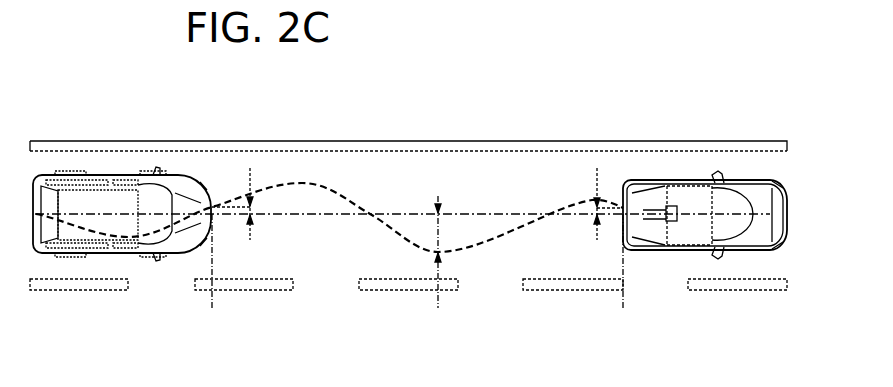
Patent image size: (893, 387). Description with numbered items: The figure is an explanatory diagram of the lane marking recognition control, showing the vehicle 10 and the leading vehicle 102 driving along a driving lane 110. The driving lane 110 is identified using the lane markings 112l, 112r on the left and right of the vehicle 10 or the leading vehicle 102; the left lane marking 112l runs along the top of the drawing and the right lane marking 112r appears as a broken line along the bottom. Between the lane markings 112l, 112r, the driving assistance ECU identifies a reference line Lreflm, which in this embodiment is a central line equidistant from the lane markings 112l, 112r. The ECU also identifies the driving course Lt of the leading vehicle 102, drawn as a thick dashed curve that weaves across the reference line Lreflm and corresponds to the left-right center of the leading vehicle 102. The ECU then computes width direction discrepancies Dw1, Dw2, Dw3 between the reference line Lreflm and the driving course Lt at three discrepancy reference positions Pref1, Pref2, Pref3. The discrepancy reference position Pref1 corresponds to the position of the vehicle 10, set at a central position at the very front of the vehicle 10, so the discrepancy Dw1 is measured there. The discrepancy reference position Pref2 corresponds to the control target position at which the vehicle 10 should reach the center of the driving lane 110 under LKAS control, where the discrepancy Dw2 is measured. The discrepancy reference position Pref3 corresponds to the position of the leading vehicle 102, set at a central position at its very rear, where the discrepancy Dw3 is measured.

The vehicle 10 is at (182, 186).
The leading vehicle 102 is at (762, 193).
The driving lane 110 is at (372, 163).
The lane marking 112l is at (488, 147).
The lane marking 112r is at (372, 290).
The driving course Lt is at (305, 182).
The reference line Lreflm is at (325, 216).
The width direction discrepancy Dw1 is at (232, 200).
The width direction discrepancy Dw2 is at (456, 229).
The width direction discrepancy Dw3 is at (590, 200).
The discrepancy reference position Pref1 is at (211, 280).
The discrepancy reference position Pref2 is at (438, 304).
The discrepancy reference position Pref3 is at (623, 280).